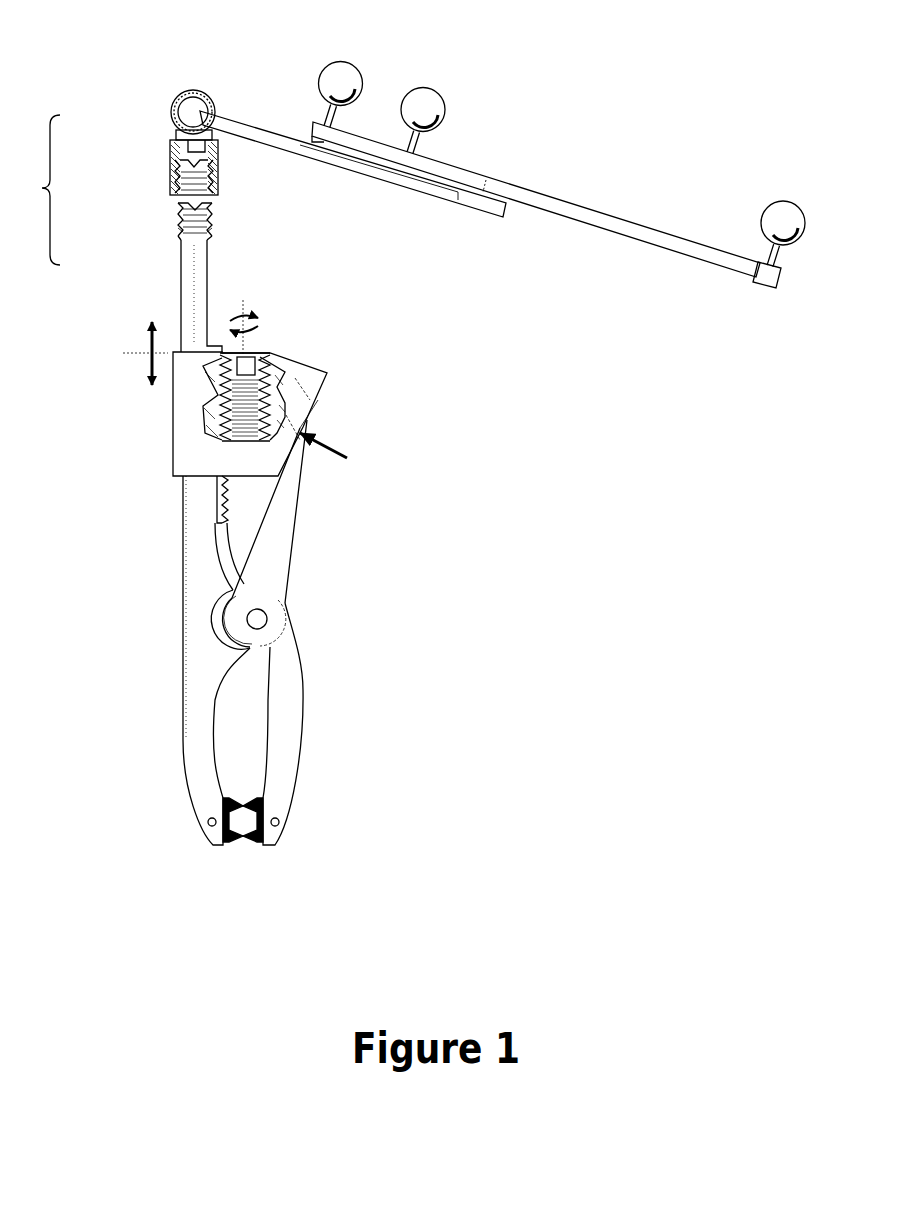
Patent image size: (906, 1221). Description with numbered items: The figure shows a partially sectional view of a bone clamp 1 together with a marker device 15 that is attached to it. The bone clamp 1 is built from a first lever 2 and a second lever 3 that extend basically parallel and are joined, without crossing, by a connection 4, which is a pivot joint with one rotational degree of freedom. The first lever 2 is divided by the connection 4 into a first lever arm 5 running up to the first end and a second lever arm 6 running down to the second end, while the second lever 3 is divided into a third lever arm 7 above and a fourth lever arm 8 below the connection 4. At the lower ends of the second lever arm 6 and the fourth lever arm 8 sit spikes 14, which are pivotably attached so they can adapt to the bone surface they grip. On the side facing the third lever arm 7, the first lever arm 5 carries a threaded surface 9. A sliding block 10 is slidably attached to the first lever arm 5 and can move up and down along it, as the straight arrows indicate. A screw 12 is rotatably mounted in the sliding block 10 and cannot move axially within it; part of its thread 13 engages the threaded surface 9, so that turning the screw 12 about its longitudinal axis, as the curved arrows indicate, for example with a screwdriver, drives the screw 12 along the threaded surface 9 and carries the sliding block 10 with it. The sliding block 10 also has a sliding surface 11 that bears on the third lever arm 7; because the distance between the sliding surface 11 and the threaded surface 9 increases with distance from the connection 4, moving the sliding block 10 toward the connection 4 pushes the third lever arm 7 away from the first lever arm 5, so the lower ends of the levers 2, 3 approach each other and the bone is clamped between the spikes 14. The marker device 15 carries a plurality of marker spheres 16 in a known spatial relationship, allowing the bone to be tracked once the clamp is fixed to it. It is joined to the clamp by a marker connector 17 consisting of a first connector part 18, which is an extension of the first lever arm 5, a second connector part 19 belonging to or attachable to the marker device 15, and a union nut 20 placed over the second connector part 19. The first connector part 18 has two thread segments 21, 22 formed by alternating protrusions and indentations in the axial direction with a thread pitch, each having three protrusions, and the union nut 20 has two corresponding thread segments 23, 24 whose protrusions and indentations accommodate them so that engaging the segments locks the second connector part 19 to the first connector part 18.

The bone clamp 1 is at (520, 517).
The first lever 2 is at (183, 628).
The second lever 3 is at (285, 600).
The connection 4 is at (260, 622).
The first lever arm 5 is at (197, 553).
The second lever arm 6 is at (197, 772).
The third lever arm 7 is at (275, 543).
The fourth lever arm 8 is at (287, 772).
The threaded surface 9 is at (218, 483).
The sliding block 10 is at (300, 395).
The sliding surface 11 is at (305, 415).
The screw 12 is at (253, 395).
The thread 13 is at (230, 385).
The spikes 14 is at (231, 843).
The marker device 15 is at (606, 150).
The marker spheres 16 is at (427, 89).
The marker connector 17 is at (157, 177).
The first connector part 18 is at (200, 220).
The second connector part 19 is at (193, 160).
The union nut 20 is at (172, 169).
The thread segment 21 is at (178, 229).
The thread segment 22 is at (210, 215).
The thread segment 23 is at (208, 170).
The thread segment 24 is at (180, 178).